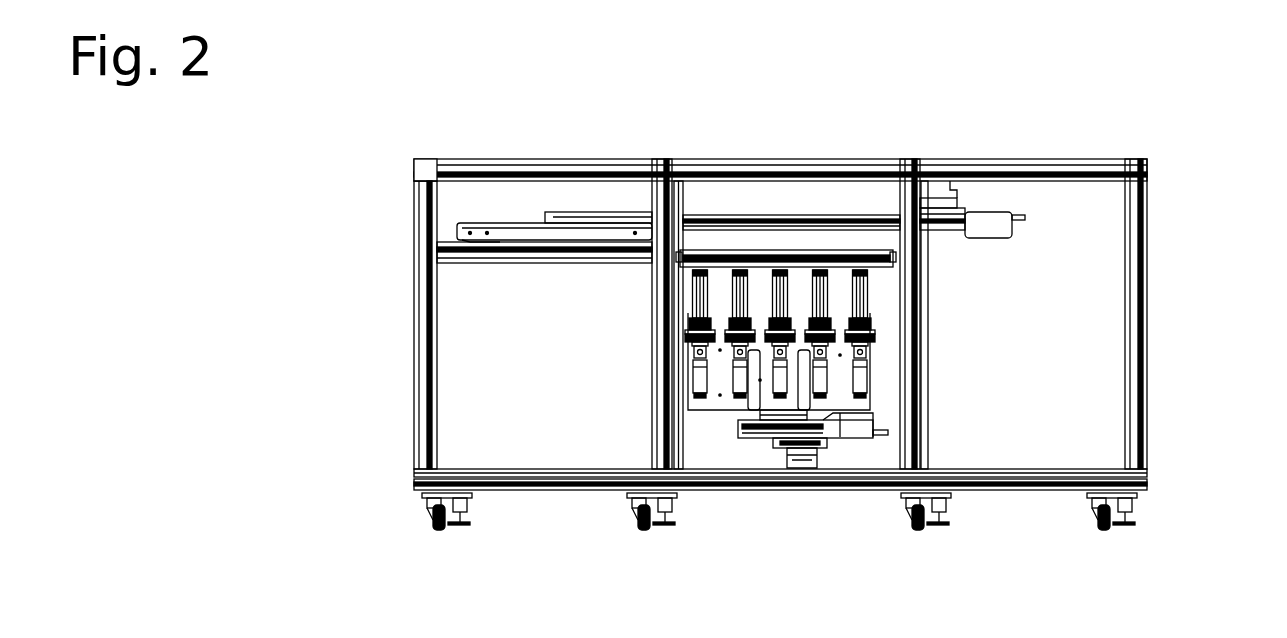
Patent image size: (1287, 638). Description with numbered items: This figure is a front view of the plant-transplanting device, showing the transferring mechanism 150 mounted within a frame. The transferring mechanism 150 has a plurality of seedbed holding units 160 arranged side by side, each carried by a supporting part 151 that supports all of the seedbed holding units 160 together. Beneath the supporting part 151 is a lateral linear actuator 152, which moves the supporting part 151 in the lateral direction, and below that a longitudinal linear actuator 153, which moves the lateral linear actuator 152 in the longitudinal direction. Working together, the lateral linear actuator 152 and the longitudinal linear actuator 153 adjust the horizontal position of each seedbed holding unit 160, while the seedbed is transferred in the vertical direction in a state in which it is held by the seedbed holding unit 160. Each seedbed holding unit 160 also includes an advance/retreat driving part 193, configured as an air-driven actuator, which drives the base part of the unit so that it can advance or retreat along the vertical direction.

The transferring mechanism 150 is at (893, 348).
The supporting part 151 is at (724, 402).
The lateral linear actuator 152 is at (858, 428).
The longitudinal linear actuator 153 is at (793, 460).
The seedbed holding unit 160 is at (740, 268).
The advance/retreat driving part 193 is at (693, 378).